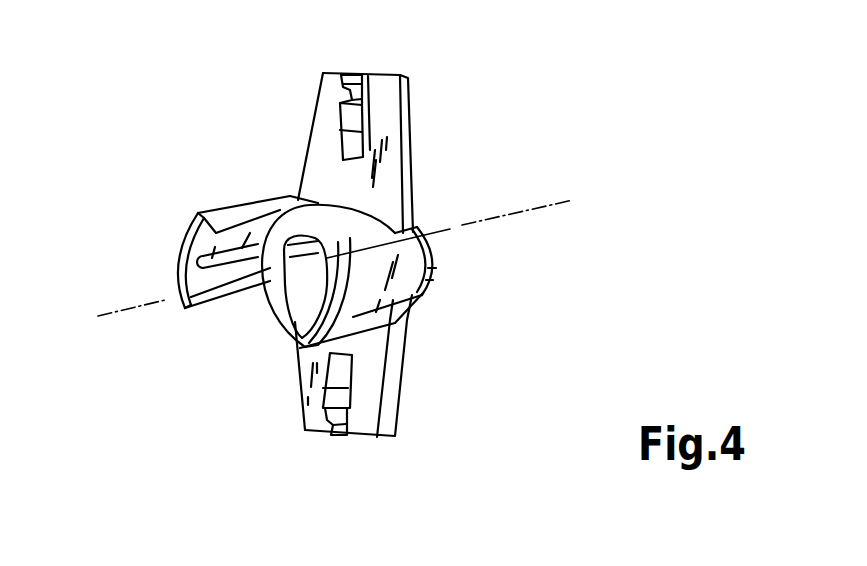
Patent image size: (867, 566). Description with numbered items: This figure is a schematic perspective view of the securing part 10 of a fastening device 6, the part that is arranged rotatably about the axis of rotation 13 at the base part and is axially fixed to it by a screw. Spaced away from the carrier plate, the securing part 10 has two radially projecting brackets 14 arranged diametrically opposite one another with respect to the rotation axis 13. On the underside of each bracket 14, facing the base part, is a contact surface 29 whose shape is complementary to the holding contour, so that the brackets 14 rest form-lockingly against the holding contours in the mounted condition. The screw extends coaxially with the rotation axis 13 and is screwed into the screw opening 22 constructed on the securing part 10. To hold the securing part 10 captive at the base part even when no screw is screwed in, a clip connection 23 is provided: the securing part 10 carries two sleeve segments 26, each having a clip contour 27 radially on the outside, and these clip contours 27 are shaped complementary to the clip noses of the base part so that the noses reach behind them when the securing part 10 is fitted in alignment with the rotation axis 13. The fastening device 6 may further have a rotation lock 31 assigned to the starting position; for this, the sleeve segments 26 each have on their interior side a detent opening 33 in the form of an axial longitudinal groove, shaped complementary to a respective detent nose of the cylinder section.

The fastening device 6 is at (240, 105).
The securing part 10 is at (380, 180).
The axis of rotation 13 is at (132, 311).
The bracket 14 is at (390, 112).
The screw opening 22 is at (290, 237).
The clip connection 23 is at (353, 317).
The sleeve segment 26 is at (223, 226).
The clip contour 27 is at (375, 226).
The contact surface 29 is at (345, 80).
The rotation lock 31 is at (220, 272).
The detent opening 33 is at (192, 232).